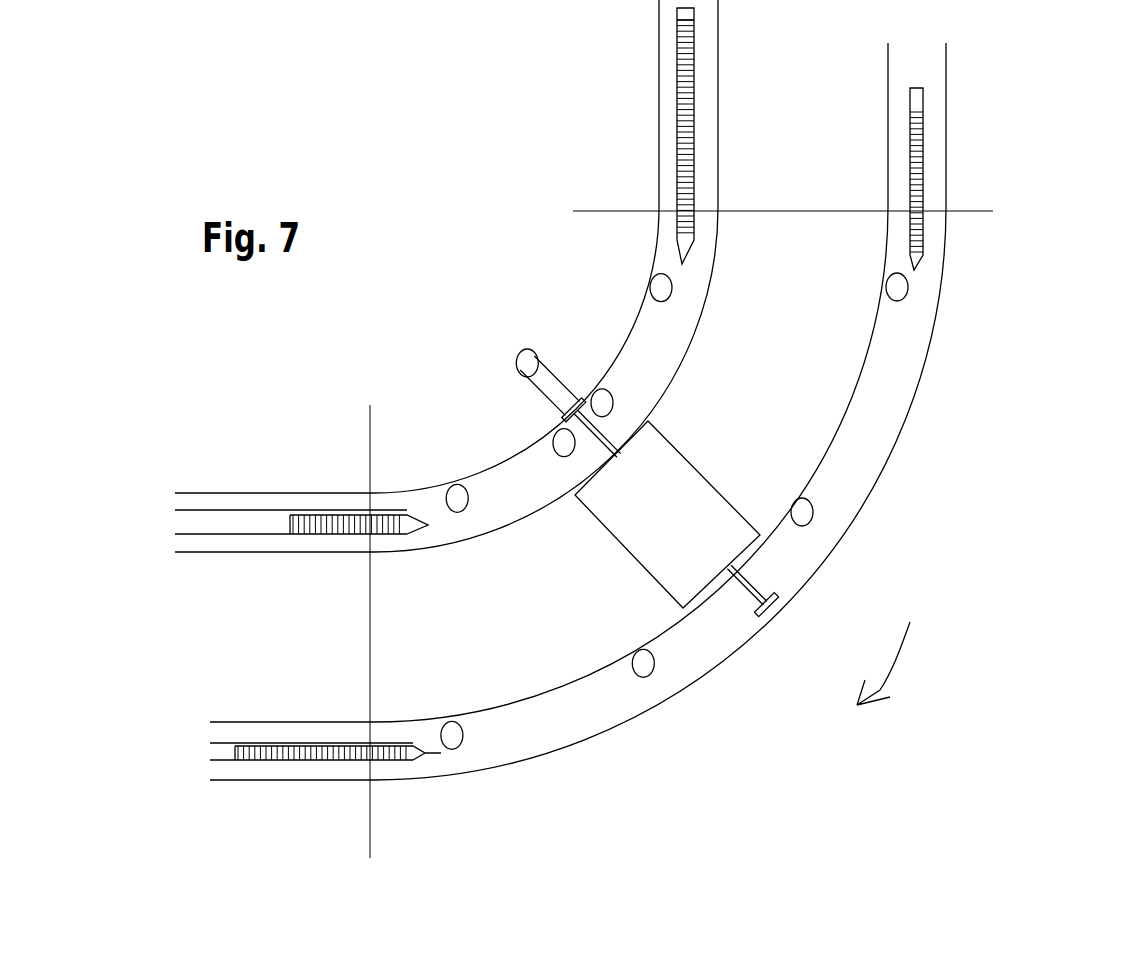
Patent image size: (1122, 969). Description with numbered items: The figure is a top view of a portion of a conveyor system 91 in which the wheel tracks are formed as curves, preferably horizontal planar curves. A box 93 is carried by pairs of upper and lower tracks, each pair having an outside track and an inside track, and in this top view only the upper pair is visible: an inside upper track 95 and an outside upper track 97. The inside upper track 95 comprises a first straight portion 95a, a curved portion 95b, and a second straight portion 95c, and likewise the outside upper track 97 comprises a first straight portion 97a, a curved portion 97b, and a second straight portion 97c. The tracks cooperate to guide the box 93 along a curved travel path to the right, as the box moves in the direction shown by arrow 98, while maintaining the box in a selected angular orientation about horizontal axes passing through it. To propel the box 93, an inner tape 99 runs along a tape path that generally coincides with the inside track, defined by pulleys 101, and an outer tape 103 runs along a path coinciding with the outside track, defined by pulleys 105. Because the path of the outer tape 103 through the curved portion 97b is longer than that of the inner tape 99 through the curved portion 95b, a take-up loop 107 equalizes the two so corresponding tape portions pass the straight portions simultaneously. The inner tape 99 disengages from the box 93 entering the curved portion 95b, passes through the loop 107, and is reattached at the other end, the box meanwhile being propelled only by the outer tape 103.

The conveyor system 91 is at (528, 177).
The box 93 is at (650, 548).
The inside upper track 95 is at (446, 276).
The first straight portion 95a is at (659, 84).
The curved portion 95b is at (643, 334).
The second straight portion 95c is at (224, 500).
The outside upper track 97 is at (630, 411).
The first straight portion 97a is at (937, 137).
The curved portion 97b is at (885, 420).
The second straight portion 97c is at (250, 773).
The arrow 98 is at (890, 668).
The inner tape 99 is at (668, 225).
The pulleys 101 is at (661, 287).
The outer tape 103 is at (925, 233).
The pulleys 105 is at (890, 289).
The take-up loop 107 is at (517, 352).